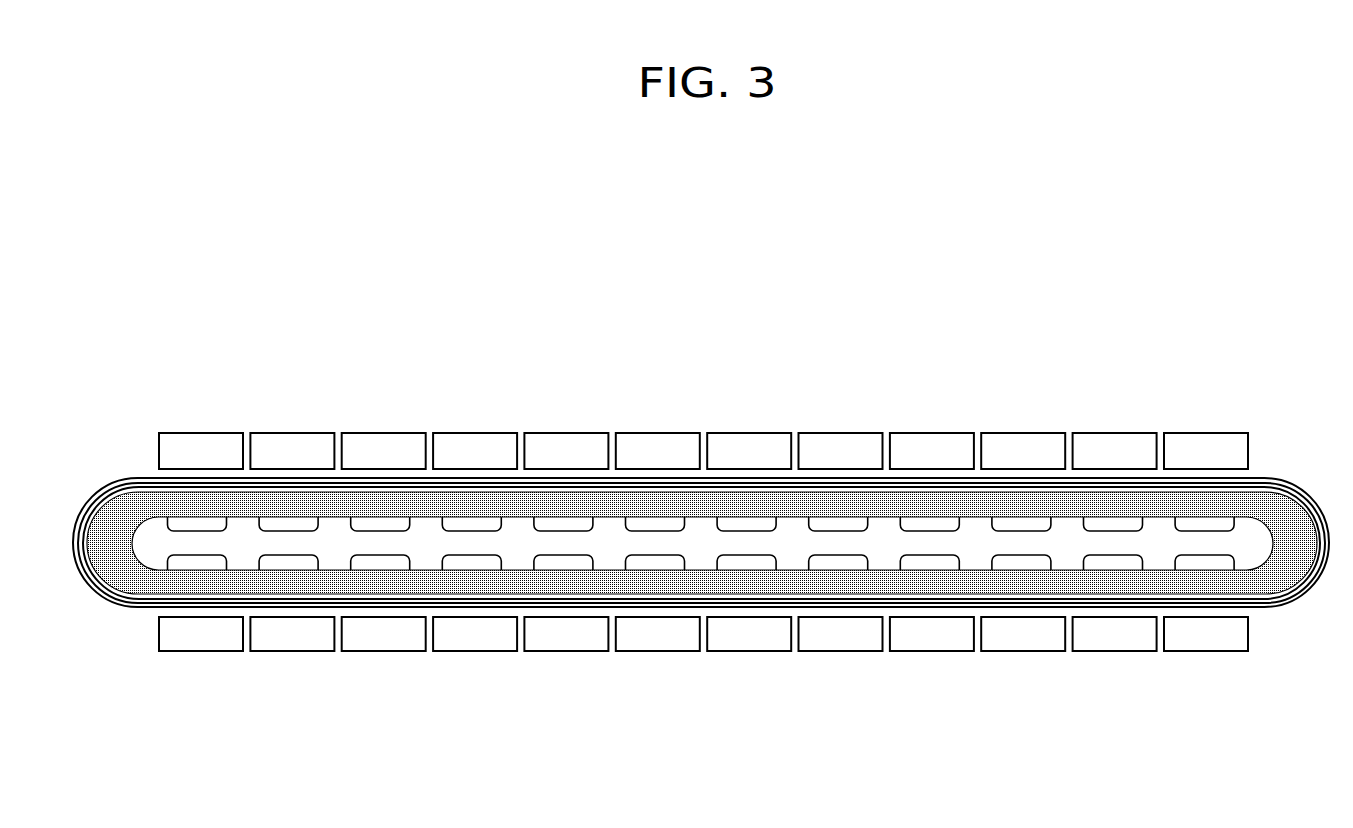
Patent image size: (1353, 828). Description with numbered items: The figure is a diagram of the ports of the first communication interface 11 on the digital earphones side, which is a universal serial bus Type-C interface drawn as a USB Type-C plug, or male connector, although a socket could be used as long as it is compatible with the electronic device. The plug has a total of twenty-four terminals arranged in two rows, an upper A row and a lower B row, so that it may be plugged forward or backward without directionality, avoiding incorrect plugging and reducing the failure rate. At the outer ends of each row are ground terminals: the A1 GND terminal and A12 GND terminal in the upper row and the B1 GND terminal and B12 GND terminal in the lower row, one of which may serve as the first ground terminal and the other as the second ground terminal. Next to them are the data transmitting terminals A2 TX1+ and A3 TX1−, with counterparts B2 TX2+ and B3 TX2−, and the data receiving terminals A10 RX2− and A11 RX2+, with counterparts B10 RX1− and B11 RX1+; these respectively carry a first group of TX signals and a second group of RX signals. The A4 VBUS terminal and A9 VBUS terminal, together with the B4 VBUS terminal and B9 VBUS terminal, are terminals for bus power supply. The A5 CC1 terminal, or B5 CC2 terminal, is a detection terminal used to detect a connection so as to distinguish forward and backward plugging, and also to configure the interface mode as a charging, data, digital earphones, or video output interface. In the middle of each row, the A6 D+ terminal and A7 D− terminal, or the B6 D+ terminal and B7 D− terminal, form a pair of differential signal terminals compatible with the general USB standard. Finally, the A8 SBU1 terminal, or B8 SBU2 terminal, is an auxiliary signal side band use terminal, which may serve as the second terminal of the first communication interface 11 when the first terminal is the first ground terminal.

The first communication interface 11 is at (1267, 375).
The A1 GND terminal A1 is at (1206, 468).
The A2 TX1+ terminal A2 is at (1115, 468).
The A3 TX1− terminal A3 is at (1023, 468).
The A4 VBUS terminal A4 is at (932, 468).
The A5 CC1 terminal A5 is at (841, 468).
The A6 D+ terminal A6 is at (749, 468).
The A7 D− terminal A7 is at (658, 468).
The A8 SBU1 terminal A8 is at (566, 468).
The A9 VBUS terminal A9 is at (475, 468).
The A10 RX2− terminal A10 is at (384, 468).
The A11 RX2+ terminal A11 is at (292, 468).
The A12 GND terminal A12 is at (201, 468).
The B1 GND terminal B1 is at (201, 618).
The B2 TX2+ terminal B2 is at (292, 618).
The B3 TX2− terminal B3 is at (384, 618).
The B4 VBUS terminal B4 is at (475, 618).
The B5 CC2 terminal B5 is at (566, 618).
The B6 D+ terminal B6 is at (658, 618).
The B7 D− terminal B7 is at (749, 618).
The B8 SBU2 terminal B8 is at (841, 618).
The B9 VBUS terminal B9 is at (932, 618).
The B10 RX1− terminal B10 is at (1023, 618).
The B11 RX1+ terminal B11 is at (1115, 618).
The B12 GND terminal B12 is at (1206, 618).